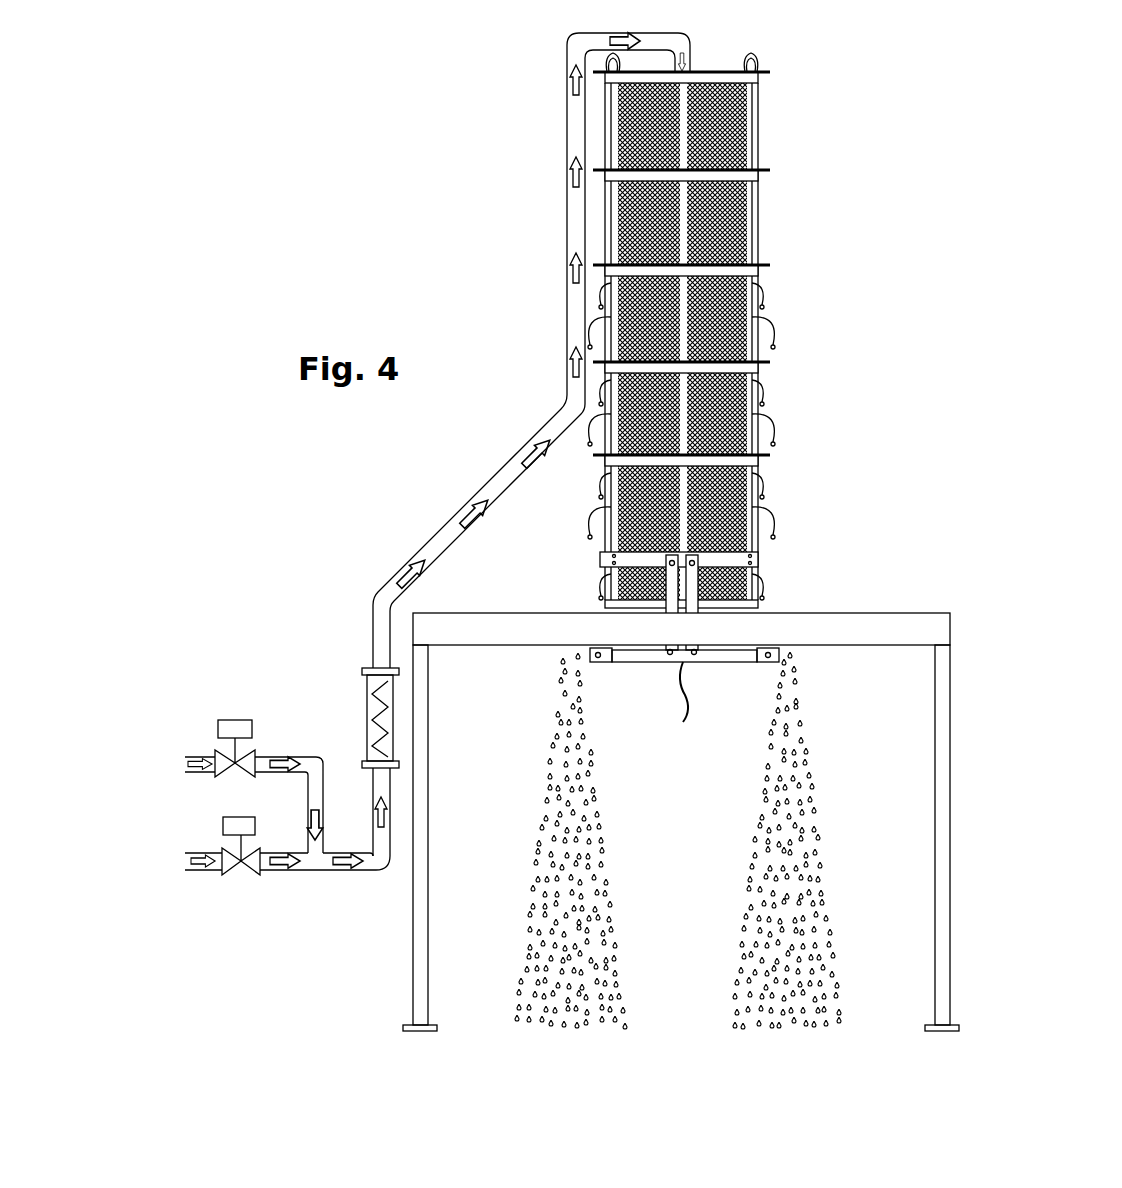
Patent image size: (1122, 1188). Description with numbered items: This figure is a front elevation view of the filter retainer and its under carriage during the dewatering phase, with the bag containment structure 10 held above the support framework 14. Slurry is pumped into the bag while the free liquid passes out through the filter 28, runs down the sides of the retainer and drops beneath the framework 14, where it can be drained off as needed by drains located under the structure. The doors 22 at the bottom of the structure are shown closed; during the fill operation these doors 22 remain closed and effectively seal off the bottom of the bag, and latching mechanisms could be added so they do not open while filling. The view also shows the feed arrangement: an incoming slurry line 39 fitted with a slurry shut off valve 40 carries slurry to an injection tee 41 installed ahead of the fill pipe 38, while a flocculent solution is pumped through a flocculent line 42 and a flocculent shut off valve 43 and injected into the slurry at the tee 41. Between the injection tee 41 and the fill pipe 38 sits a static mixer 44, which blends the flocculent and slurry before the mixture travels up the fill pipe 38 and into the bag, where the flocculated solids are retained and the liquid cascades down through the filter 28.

The treatment tower 10 is at (757, 45).
The support frame 14 is at (950, 608).
The doors 22 is at (718, 657).
The mesh panels 28 is at (745, 222).
The fill pipe 38 is at (560, 428).
The slurry line 39 is at (215, 866).
The slurry shut off valve 40 is at (252, 850).
The injection tee 41 is at (315, 866).
The flocculent line 42 is at (203, 757).
The flocculent shut off valve 43 is at (248, 757).
The static mixer 44 is at (375, 690).